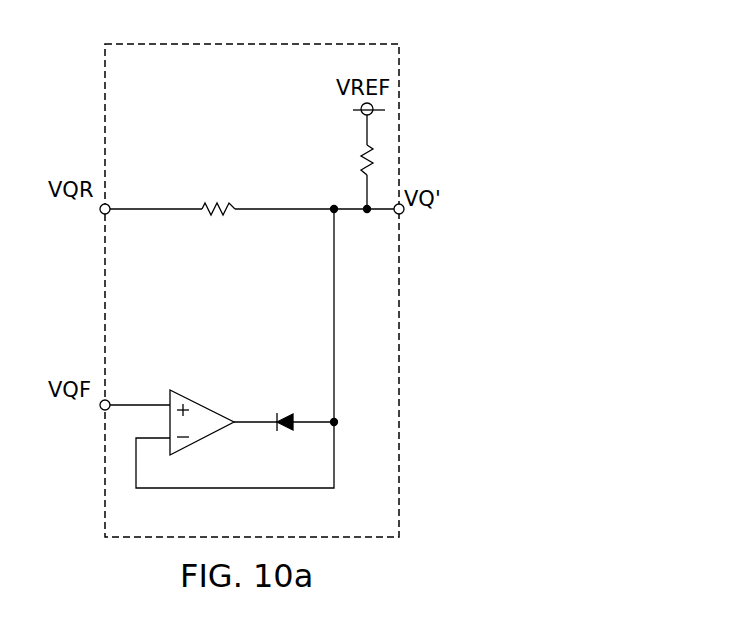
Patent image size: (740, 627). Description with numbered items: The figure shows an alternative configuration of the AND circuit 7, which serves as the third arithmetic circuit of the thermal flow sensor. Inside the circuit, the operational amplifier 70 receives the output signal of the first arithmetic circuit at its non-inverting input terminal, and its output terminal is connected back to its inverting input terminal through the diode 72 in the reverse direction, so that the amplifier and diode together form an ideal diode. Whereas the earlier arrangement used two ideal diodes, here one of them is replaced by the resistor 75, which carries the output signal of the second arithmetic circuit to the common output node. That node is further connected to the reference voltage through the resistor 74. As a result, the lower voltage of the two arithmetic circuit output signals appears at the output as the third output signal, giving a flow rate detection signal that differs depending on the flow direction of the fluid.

The AND circuit 7 is at (161, 44).
The resistor 74 is at (351, 150).
The resistor 75 is at (214, 193).
The operational amplifier 70 is at (197, 402).
The diode 72 is at (285, 413).